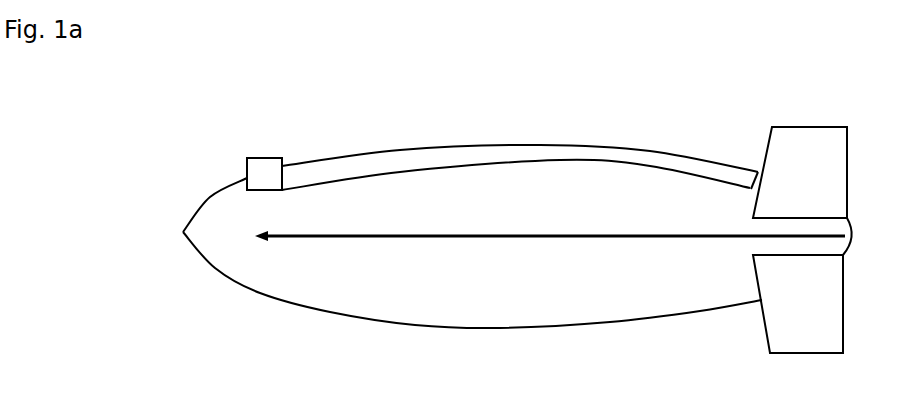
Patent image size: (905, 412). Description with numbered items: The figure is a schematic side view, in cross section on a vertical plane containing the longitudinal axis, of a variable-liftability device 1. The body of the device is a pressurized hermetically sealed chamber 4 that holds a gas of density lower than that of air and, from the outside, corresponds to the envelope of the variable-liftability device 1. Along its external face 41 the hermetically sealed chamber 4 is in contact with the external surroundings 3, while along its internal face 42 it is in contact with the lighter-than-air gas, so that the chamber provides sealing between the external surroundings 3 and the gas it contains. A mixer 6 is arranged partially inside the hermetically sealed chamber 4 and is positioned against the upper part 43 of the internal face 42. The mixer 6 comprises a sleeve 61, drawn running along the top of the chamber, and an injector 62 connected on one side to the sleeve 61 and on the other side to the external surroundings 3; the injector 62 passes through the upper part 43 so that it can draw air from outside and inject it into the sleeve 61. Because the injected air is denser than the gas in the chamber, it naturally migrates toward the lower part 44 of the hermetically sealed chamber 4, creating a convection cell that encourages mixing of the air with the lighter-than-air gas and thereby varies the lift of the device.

The variable-liftability device 1 is at (147, 257).
The external surroundings 3 is at (240, 352).
The hermetically sealed chamber 4 is at (215, 265).
The external face 41 is at (415, 325).
The internal face 42 is at (610, 322).
The upper part 43 is at (183, 228).
The lower part 44 is at (500, 305).
The mixer 6 is at (350, 145).
The sleeve 61 is at (488, 152).
The injector 62 is at (244, 157).